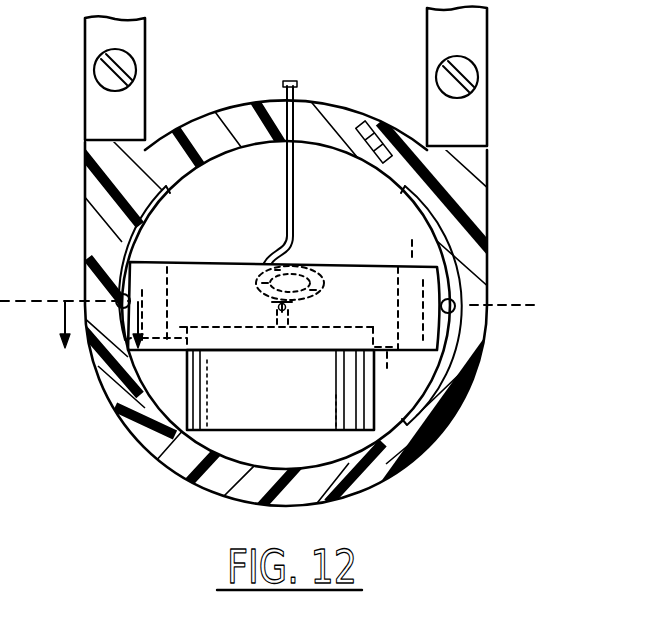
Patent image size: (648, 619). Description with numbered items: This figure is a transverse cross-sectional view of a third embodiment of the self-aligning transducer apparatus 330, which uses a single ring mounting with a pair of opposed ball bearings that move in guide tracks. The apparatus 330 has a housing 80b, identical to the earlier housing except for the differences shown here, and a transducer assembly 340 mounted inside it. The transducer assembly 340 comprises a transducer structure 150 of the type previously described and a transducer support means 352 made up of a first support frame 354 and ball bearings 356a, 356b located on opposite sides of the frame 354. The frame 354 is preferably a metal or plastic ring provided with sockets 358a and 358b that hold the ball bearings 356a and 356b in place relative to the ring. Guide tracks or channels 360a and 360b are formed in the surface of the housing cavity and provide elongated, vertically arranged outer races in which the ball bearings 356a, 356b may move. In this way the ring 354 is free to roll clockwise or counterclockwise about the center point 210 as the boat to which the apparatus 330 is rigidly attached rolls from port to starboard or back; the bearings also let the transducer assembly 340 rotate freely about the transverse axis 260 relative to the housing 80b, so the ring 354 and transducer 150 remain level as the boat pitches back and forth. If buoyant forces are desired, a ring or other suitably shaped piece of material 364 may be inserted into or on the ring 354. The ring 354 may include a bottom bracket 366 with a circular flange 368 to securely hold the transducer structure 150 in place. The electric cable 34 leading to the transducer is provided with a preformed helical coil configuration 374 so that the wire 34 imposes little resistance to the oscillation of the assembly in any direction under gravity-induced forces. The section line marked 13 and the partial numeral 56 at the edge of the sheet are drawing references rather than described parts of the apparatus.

The mounting bracket 56 is at (72, 78).
The housing 80b is at (212, 113).
The electric cable 34 is at (296, 95).
The guide track 360a is at (103, 212).
The guide track 360b is at (436, 233).
The transducer support means 352 is at (158, 251).
The ball bearing 356a is at (117, 301).
The ball bearing 356b is at (457, 302).
The first support frame 354 is at (201, 260).
The helical coil configuration 374 is at (302, 258).
The piece of material 364 is at (412, 243).
The socket 358a is at (150, 285).
The socket 358b is at (427, 307).
The center point 210 is at (316, 312).
The transverse axis 260 is at (505, 294).
The transducer structure 150 is at (288, 393).
The bottom bracket 366 is at (217, 397).
The circular flange 368 is at (399, 373).
The transducer assembly 340 is at (247, 445).
The transducer apparatus 330 is at (420, 471).
The section line 13- 13 is at (85, 342).